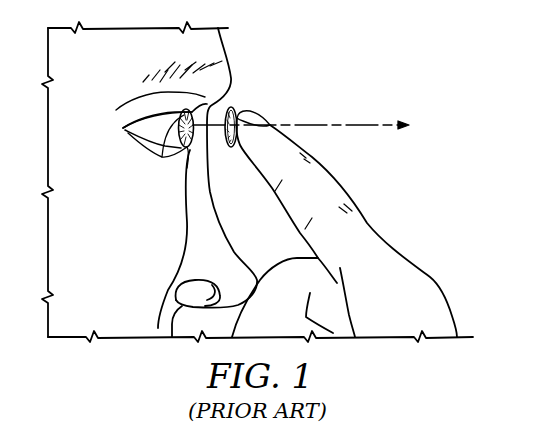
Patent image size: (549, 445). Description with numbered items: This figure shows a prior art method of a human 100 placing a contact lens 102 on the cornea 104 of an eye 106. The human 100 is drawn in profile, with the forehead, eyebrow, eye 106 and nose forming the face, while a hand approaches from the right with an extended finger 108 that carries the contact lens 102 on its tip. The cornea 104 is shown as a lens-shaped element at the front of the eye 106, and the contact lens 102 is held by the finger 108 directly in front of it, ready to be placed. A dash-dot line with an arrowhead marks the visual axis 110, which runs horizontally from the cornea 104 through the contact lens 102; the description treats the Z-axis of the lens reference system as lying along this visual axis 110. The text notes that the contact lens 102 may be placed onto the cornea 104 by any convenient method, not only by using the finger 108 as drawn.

The human 100 is at (236, 50).
The contact lens 102 is at (237, 110).
The cornea 104 is at (178, 147).
The eye 106 is at (148, 128).
The finger 108 is at (347, 193).
The visual axis 110 is at (320, 126).